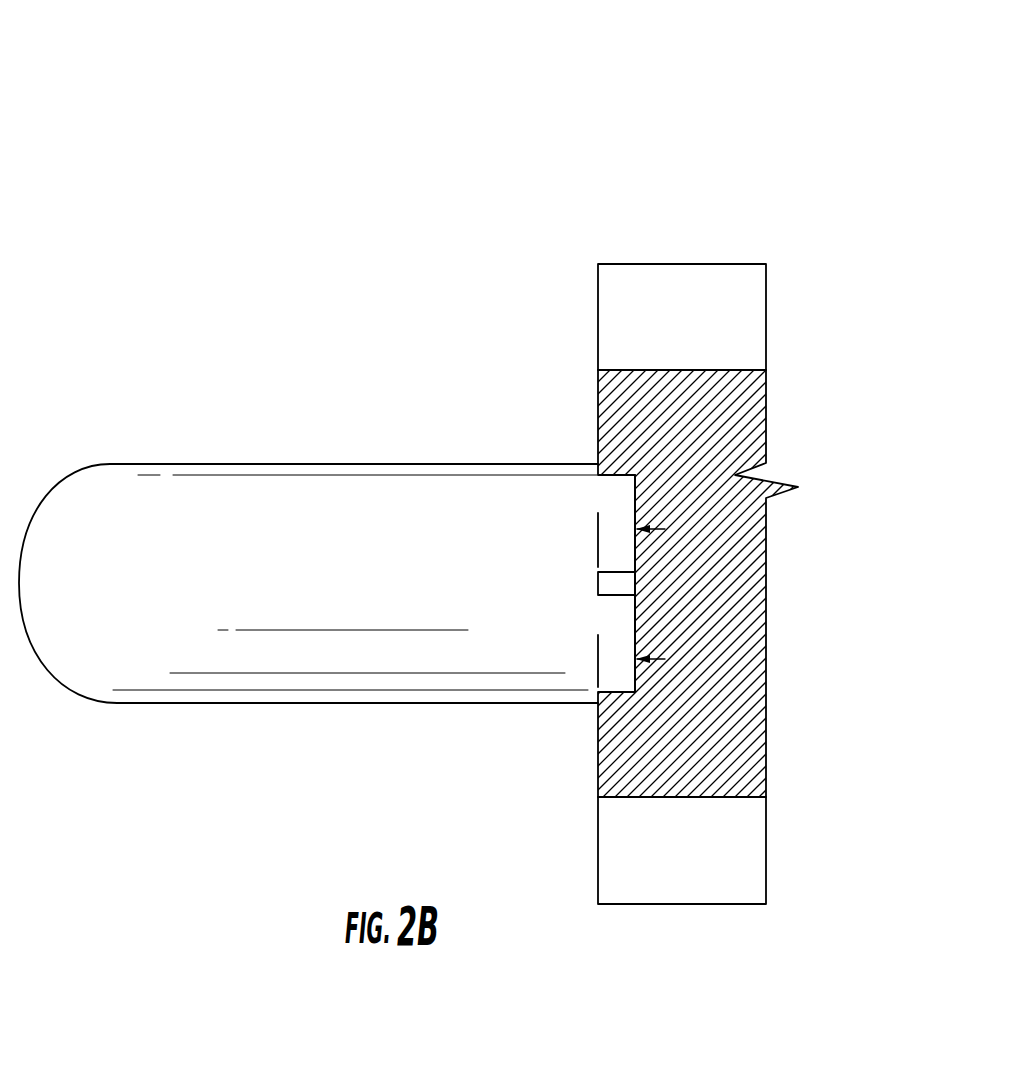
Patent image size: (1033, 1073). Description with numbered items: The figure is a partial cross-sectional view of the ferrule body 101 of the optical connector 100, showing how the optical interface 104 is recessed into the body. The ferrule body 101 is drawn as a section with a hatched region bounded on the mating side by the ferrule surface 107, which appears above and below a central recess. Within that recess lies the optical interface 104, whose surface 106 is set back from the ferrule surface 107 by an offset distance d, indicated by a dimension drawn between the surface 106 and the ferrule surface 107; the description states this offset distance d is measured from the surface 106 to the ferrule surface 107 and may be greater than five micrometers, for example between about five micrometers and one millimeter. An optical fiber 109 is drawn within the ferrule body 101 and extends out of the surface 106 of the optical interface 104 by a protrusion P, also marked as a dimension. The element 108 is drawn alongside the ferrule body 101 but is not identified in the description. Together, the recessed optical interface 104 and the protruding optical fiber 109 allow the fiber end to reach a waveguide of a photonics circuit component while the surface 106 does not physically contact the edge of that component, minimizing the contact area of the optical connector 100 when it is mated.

The optical connector 100 is at (824, 147).
The ferrule body 101 is at (718, 219).
The optical interface 104 is at (633, 620).
The surface of the optical interface 106 is at (635, 500).
The ferrule surface 107 is at (598, 418).
The tube 108 is at (164, 482).
The optical fiber 109 is at (598, 580).
The protrusion P is at (597, 529).
The offset distance d is at (597, 659).